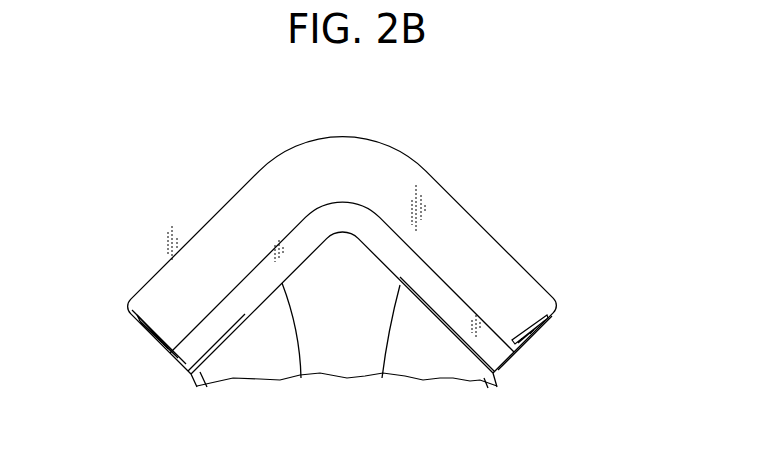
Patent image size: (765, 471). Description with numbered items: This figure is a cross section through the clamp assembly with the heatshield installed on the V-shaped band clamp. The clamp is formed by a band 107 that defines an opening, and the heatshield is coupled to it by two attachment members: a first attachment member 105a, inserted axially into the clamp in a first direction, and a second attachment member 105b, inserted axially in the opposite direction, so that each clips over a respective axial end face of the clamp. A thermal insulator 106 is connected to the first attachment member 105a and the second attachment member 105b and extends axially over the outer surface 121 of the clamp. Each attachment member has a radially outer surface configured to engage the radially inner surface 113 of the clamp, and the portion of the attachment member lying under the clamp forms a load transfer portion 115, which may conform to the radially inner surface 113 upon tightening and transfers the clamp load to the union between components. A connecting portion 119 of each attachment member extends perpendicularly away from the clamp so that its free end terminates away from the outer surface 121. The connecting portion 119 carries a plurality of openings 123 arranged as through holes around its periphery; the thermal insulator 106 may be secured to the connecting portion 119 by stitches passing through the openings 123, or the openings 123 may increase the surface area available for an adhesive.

The thermal insulator 106 is at (237, 193).
The first attachment member 105a is at (237, 325).
The second attachment member 105b is at (452, 335).
The band 107 is at (410, 262).
The outer surface 121 is at (467, 301).
The connecting portion 119 is at (517, 342).
The openings 123 is at (138, 333).
The radially inner surface 113 is at (377, 257).
The load transfer portion 115 is at (405, 360).